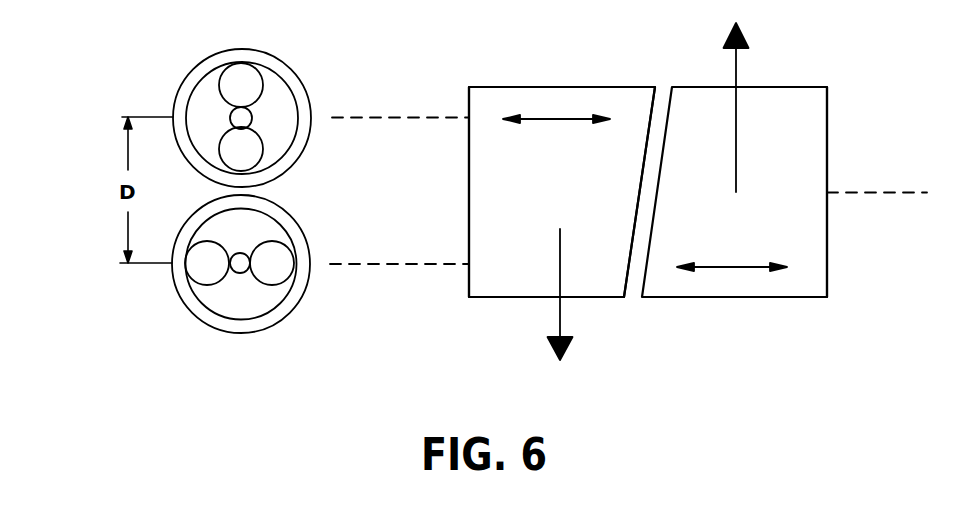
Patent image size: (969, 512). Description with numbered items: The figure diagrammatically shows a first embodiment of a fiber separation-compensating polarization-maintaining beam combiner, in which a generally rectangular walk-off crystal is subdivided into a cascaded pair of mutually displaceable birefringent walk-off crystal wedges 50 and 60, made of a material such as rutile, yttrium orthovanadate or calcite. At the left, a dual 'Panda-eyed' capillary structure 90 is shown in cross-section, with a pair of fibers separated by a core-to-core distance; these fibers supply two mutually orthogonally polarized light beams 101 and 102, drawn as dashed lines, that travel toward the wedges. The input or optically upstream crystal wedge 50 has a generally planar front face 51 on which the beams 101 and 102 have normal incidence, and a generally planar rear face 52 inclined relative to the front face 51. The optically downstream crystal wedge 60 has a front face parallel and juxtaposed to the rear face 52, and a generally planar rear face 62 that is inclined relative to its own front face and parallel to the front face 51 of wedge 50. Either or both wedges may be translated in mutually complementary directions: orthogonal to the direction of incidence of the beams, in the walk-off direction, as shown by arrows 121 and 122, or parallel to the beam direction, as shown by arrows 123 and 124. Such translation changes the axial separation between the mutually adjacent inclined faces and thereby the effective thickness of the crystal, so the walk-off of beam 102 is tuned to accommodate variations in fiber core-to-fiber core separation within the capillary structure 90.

The input crystal wedge 50 is at (507, 87).
The front face 51 is at (469, 277).
The rear face 52 is at (652, 117).
The downstream crystal wedge 60 is at (810, 87).
The rear face 62 is at (827, 277).
The dual 'Panda-eyed' capillary structure 90 is at (186, 326).
The beam 101 is at (360, 264).
The beam 102 is at (359, 117).
The arrow 121 is at (562, 307).
The arrow 122 is at (737, 78).
The arrow 123 is at (540, 118).
The arrow 124 is at (723, 267).